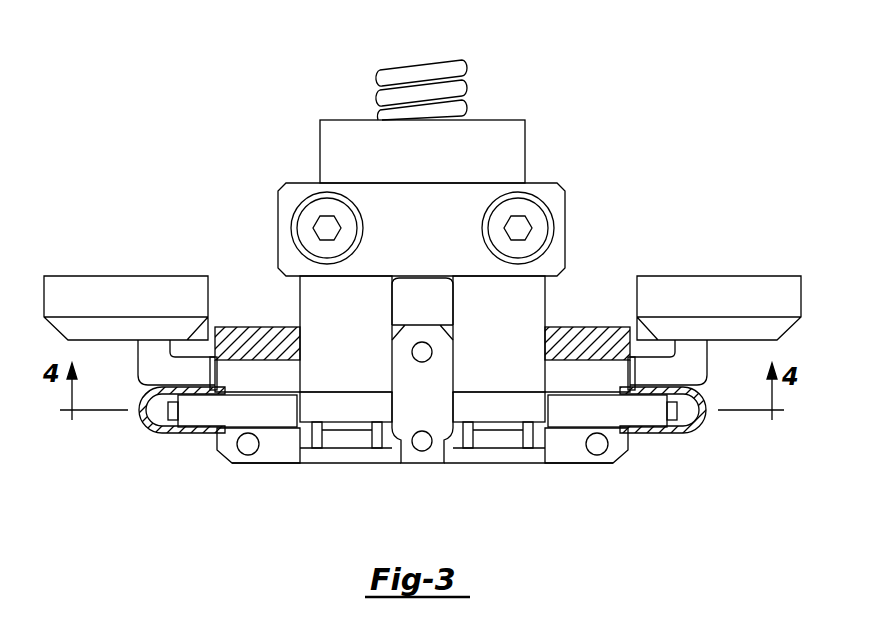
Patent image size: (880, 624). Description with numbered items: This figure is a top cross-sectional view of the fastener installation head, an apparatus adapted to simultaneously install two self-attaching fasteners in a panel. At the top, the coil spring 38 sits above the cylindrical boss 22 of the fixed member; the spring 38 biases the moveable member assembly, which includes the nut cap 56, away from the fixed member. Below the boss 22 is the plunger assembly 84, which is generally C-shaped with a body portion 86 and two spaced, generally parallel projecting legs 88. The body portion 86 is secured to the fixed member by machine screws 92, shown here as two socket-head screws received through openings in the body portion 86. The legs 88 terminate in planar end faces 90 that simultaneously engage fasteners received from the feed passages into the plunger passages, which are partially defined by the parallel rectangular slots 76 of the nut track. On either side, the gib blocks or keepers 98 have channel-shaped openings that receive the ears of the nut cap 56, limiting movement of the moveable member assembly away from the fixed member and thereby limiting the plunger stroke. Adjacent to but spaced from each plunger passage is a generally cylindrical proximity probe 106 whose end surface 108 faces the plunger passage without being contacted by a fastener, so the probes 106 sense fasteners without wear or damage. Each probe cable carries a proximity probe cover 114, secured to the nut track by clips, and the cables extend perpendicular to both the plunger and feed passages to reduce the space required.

The coil spring 38 is at (455, 82).
The cylindrical boss 22 is at (517, 150).
The plunger assembly 84 is at (458, 211).
The body portion 86 is at (425, 213).
The machine screws 92 is at (500, 242).
The legs 88 is at (362, 323).
The gib blocks 98 is at (152, 291).
The nut cap 56 is at (607, 325).
The planar end faces 90 is at (363, 393).
The rectangular slots 76 is at (493, 440).
The proximity probe 106 is at (254, 421).
The end surface 108 is at (320, 441).
The proximity probe cover 114 is at (200, 433).